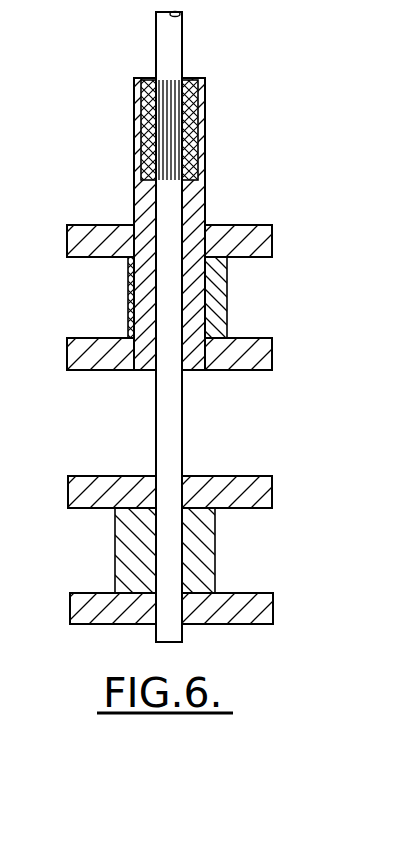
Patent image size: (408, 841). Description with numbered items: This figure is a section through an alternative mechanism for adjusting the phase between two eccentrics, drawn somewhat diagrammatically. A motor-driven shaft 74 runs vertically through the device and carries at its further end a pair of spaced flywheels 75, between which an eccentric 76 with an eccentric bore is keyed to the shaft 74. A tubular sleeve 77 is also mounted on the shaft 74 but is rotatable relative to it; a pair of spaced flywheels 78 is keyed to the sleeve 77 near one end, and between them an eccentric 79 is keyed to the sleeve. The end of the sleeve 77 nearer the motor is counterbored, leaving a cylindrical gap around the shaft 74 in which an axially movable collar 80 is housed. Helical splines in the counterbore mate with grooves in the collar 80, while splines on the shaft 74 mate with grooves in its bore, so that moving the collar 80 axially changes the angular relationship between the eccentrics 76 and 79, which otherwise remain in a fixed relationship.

The shaft 74 is at (168, 38).
The spaced flywheels 75 is at (243, 605).
The eccentric 76 is at (125, 535).
The tubular sleeve 77 is at (193, 196).
The spaced flywheels 78 is at (245, 353).
The eccentric 79 is at (130, 287).
The axially movable collar 80 is at (203, 108).